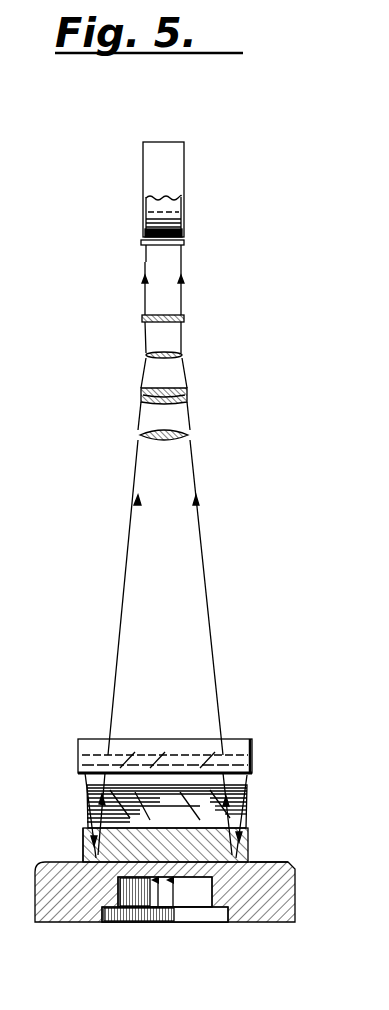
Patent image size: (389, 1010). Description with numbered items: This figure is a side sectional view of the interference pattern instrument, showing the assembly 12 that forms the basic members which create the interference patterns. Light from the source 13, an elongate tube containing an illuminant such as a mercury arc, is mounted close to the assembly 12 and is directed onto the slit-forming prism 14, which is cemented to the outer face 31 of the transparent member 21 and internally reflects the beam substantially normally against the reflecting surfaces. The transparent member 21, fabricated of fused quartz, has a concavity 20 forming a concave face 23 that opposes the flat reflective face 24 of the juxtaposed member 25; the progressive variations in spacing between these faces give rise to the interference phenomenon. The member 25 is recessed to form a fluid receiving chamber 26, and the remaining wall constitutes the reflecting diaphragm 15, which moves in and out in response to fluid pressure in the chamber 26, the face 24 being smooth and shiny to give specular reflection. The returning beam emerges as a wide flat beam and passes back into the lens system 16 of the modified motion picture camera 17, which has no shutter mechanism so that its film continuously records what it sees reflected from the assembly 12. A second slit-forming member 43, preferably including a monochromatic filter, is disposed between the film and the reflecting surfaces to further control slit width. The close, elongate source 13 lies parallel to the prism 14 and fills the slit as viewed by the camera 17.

The assembly 12 is at (279, 775).
The elongate tube light source 13 is at (85, 742).
The prism 14 is at (244, 803).
The reflecting diaphragm 15 is at (205, 880).
The lens system 16 is at (218, 396).
The motion picture camera 17 is at (175, 176).
The concavity 20 is at (152, 858).
The transparent member 21 is at (57, 845).
The concave face 23 is at (214, 858).
The reflective face 24 is at (270, 862).
The juxtaposed member 25 is at (278, 896).
The fluid receiving chamber 26 is at (205, 915).
The outer face 31 is at (101, 824).
The second slit-forming member 43 is at (184, 243).